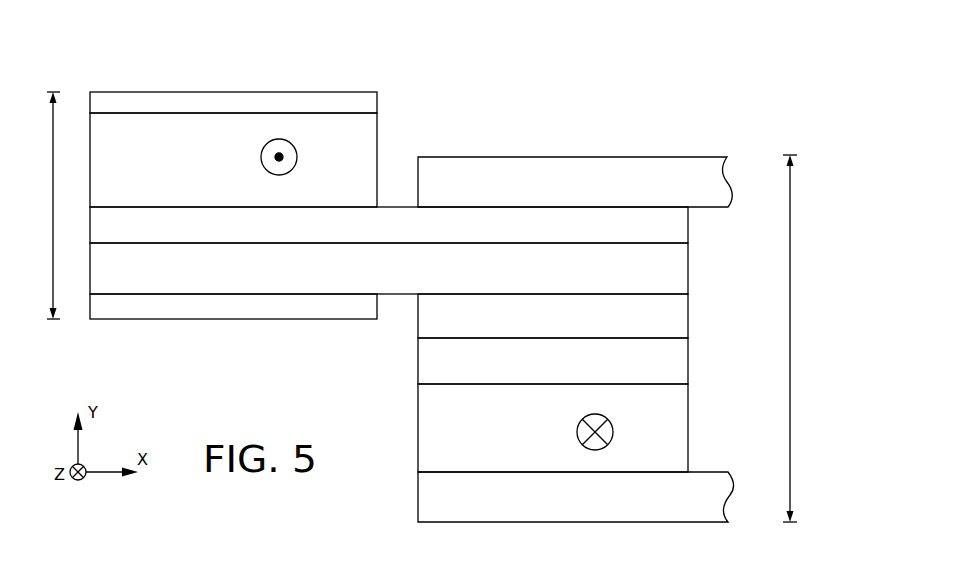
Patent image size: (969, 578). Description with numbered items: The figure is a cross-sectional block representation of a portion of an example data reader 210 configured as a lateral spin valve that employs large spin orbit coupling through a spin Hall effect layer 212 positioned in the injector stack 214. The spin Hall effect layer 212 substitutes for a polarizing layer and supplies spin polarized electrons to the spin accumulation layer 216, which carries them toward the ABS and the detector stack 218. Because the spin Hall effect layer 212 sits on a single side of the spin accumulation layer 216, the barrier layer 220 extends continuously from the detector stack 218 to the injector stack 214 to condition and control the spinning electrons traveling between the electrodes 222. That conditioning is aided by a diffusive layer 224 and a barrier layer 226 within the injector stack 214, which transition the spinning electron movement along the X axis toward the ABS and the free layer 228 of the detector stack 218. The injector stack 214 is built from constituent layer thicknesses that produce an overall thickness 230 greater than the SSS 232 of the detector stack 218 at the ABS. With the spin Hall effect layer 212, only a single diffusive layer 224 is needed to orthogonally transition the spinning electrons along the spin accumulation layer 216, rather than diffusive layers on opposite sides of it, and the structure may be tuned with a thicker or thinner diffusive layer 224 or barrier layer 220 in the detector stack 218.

The data reader 210 is at (787, 66).
The spin Hall effect layer 212 is at (682, 439).
The injector stack 214 is at (647, 136).
The spin accumulation layer 216 is at (682, 279).
The detector stack 218 is at (96, 78).
The barrier layer 220 is at (682, 234).
The electrodes 222 is at (457, 191).
The diffusive layer 224 is at (682, 327).
The barrier layer 226 is at (682, 372).
The free layer 228 is at (368, 169).
The overall thickness 230 is at (793, 175).
The SSS 232 is at (51, 136).